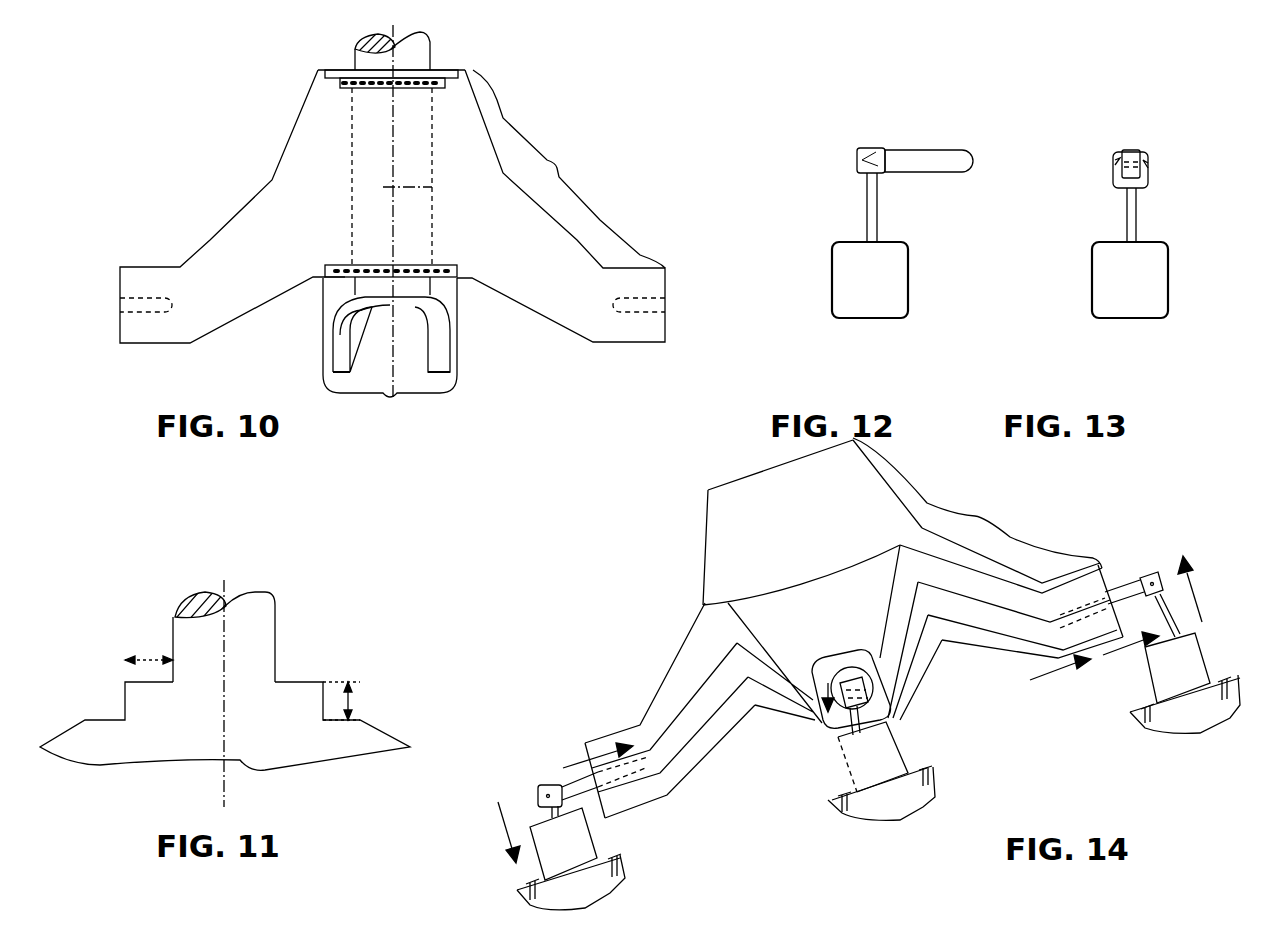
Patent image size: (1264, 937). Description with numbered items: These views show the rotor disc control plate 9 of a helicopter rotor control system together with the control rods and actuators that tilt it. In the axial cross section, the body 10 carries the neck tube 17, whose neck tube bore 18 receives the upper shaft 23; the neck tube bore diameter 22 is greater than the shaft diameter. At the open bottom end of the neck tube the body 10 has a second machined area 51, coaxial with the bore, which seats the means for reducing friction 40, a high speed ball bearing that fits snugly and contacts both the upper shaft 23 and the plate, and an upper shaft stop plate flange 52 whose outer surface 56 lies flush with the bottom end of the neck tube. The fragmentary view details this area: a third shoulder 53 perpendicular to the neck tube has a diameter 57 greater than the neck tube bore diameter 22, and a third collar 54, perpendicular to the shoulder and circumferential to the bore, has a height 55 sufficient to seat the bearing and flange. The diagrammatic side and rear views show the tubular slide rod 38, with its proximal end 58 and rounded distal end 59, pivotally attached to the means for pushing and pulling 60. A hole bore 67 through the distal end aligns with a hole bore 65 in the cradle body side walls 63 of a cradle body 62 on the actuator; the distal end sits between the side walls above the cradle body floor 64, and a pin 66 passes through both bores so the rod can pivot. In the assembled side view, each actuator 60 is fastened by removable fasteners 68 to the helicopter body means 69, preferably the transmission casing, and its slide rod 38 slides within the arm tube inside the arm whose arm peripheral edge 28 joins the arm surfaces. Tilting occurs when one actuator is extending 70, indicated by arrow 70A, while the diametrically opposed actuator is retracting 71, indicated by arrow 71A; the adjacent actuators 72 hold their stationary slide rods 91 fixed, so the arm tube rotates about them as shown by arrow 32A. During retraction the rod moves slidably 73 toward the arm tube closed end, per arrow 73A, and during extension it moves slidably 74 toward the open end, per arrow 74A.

In FIG. 10, the rotor disc control plate 9 is at (569, 169).
In FIG. 14, the rotor disc control plate 9 is at (980, 517).
In FIG. 10, the body 10 is at (483, 188).
In FIG. 10, the neck tube 17 is at (352, 150).
In FIG. 10, the neck tube bore diameter 22 is at (383, 187).
In FIG. 10, the upper shaft 23 is at (433, 57).
In FIG. 10, the means for reducing friction 40 is at (452, 83).
In FIG. 10, the second machined area 51 is at (390, 354).
In FIG. 11, the second machined area 51 is at (267, 749).
In FIG. 10, the upper shaft stop plate flange 52 is at (330, 279).
In FIG. 10, the upper shaft stop plate flange outer surface 56 is at (445, 280).
In FIG. 11, the neck tube bore 18 is at (260, 653).
In FIG. 11, the third shoulder 53 is at (295, 682).
In FIG. 11, the third collar 54 is at (125, 710).
In FIG. 11, the height 55 is at (350, 700).
In FIG. 11, the diameter 57 is at (152, 660).
In FIG. 12, the slide rod 38 is at (915, 160).
In FIG. 14, the slide rod 38 is at (1125, 583).
In FIG. 12, the proximal end 58 is at (975, 165).
In FIG. 12, the distal end 59 is at (858, 160).
In FIG. 12, the means for pushing and pulling 60 is at (882, 292).
In FIG. 13, the means for pushing and pulling 60 is at (1142, 292).
In FIG. 12, the slide rod hole bore 67 is at (860, 170).
In FIG. 13, the cradle body 62 is at (1150, 185).
In FIG. 13, the cradle body side walls 63 is at (1122, 150).
In FIG. 13, the cradle body floor 64 is at (1128, 185).
In FIG. 13, the cradle body side walls hole bore 65 is at (1112, 168).
In FIG. 13, the pin 66 is at (1150, 165).
In FIG. 14, the arm peripheral edge 28 is at (1023, 613).
In FIG. 14, the arrow 32A is at (852, 678).
In FIG. 14, the stationary slide rods 91 is at (827, 723).
In FIG. 14, the removable fasteners 68 is at (933, 780).
In FIG. 14, the helicopter body means 69 is at (900, 816).
In FIG. 14, the extending bi-directional linear hydraulic actuator 70 is at (1157, 678).
In FIG. 14, the arrow 70A is at (1195, 600).
In FIG. 14, the retracting bi-directional linear hydraulic actuator 71 is at (583, 840).
In FIG. 14, the arrow 71A is at (498, 810).
In FIG. 14, the adjacent bi-directional linear hydraulic actuators 72 is at (890, 747).
In FIG. 14, the slide rod sliding movement toward closed end 73 is at (667, 790).
In FIG. 14, the arrow 73A is at (573, 765).
In FIG. 14, the slide rod sliding movement toward open end 74 is at (1118, 631).
In FIG. 14, the arrow 74A is at (1117, 648).